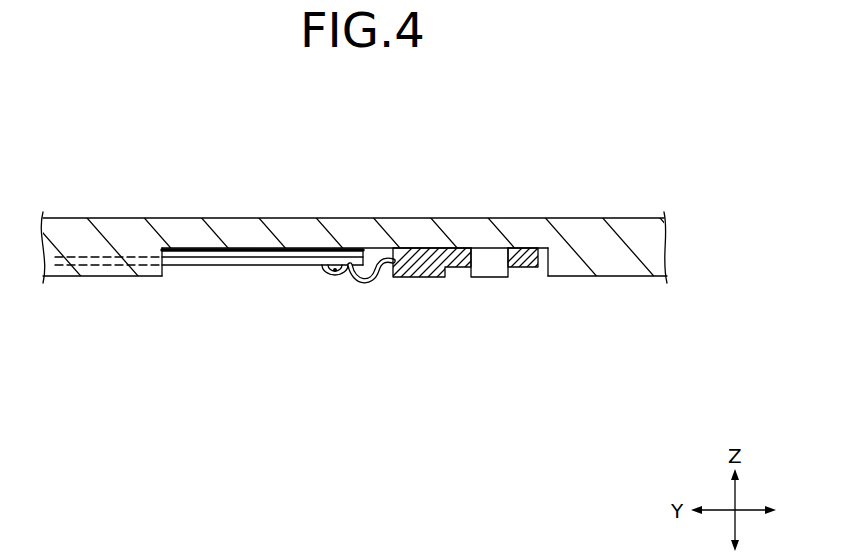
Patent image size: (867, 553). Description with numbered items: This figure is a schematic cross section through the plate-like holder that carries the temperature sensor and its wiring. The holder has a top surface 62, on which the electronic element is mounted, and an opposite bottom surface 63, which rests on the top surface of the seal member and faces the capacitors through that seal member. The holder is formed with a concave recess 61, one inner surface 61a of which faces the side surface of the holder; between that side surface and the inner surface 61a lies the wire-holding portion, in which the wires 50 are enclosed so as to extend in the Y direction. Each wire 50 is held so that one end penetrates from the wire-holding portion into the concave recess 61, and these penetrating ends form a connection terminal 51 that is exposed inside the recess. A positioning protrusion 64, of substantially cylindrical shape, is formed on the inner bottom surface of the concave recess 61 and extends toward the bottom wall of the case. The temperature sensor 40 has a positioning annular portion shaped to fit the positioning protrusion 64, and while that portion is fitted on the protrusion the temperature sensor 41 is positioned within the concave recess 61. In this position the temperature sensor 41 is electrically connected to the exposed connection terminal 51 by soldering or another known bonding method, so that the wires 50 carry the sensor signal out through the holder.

The temperature sensor 40 is at (420, 277).
The temperature sensor 41 is at (522, 248).
The wires 50 is at (102, 278).
The connection terminal 51 is at (248, 268).
The concave recess 61 is at (341, 296).
The inner surface 61a is at (163, 272).
The top surface 62 is at (620, 217).
The bottom surface 63 is at (625, 277).
The positioning protrusion 64 is at (493, 278).